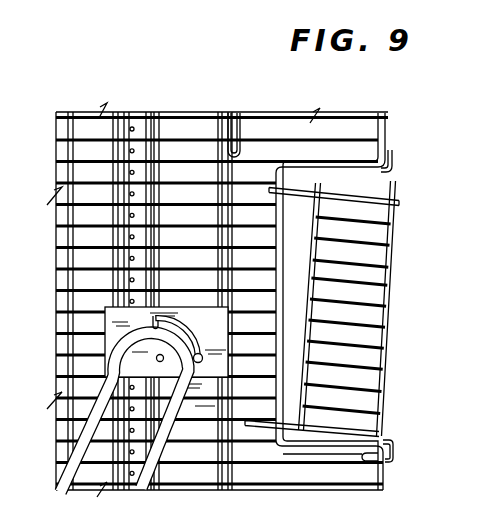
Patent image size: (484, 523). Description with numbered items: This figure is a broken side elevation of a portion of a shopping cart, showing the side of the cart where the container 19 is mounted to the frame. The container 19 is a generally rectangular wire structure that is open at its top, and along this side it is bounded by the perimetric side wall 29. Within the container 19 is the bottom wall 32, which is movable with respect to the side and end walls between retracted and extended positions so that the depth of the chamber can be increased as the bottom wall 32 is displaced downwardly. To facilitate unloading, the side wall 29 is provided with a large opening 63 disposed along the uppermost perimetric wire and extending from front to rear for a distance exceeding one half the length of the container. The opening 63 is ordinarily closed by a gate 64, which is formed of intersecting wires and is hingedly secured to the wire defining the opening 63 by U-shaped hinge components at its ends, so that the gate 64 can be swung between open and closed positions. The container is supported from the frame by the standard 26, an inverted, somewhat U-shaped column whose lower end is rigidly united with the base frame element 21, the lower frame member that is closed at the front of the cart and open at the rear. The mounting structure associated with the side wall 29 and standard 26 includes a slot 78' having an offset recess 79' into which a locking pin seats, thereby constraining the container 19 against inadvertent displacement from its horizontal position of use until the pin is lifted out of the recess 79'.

The container 19 is at (208, 109).
The bottom wall 32 is at (128, 111).
The offset recess 79' is at (151, 356).
The standard 26 is at (62, 484).
The slot 78' is at (210, 329).
The opening 63 is at (305, 180).
The side wall 29 is at (380, 114).
The gate 64 is at (393, 285).
The base frame element 21 is at (312, 486).